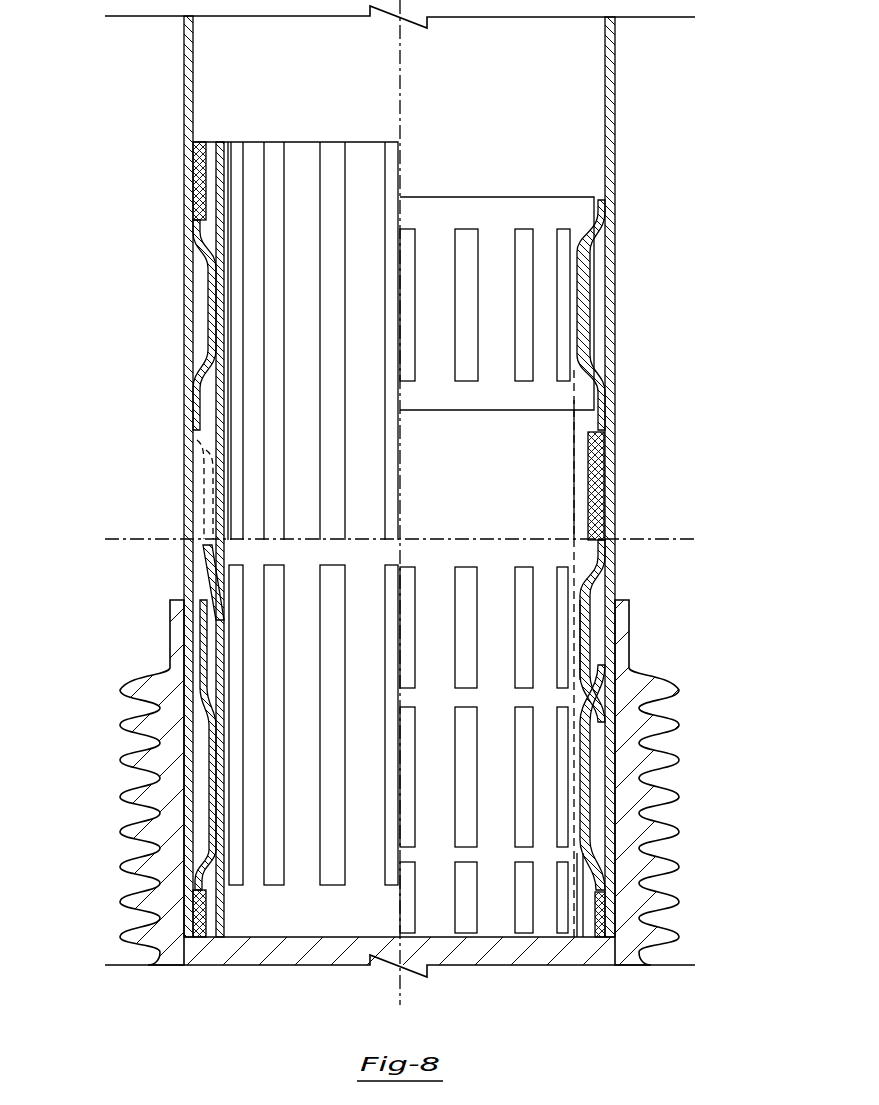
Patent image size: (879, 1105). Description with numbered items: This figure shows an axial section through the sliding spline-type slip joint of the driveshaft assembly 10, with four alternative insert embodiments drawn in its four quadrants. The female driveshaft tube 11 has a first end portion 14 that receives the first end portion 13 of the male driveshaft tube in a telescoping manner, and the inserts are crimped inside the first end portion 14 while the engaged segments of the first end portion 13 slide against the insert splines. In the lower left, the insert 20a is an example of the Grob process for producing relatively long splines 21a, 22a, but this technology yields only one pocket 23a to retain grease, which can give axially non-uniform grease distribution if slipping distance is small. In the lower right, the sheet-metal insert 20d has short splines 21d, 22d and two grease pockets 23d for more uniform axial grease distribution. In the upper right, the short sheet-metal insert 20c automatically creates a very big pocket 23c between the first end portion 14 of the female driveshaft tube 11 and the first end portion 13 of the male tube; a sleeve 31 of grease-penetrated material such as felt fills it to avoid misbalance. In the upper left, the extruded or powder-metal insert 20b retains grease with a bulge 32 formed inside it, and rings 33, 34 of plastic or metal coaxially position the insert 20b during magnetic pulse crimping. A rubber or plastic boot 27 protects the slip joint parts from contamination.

The driveshaft assembly 10 is at (678, 105).
The female driveshaft tube 11 is at (178, 107).
The first end portion of the male driveshaft tube 13 is at (577, 499).
The first end portion of the female driveshaft tube 14 is at (190, 59).
The insert 20a is at (295, 938).
The insert 20b is at (263, 162).
The insert 20c is at (542, 208).
The insert 20d is at (497, 928).
The spline 21a is at (185, 592).
The spline 21d is at (615, 563).
The spline 22a is at (217, 600).
The spline 22d is at (582, 616).
The pocket 23a is at (218, 557).
The pocket 23c is at (594, 422).
The grease pocket 23d is at (578, 692).
The boot 27 is at (118, 870).
The sleeve 31 is at (600, 480).
The bulge 32 is at (195, 471).
The ring 33 is at (198, 167).
The ring 34 is at (198, 940).